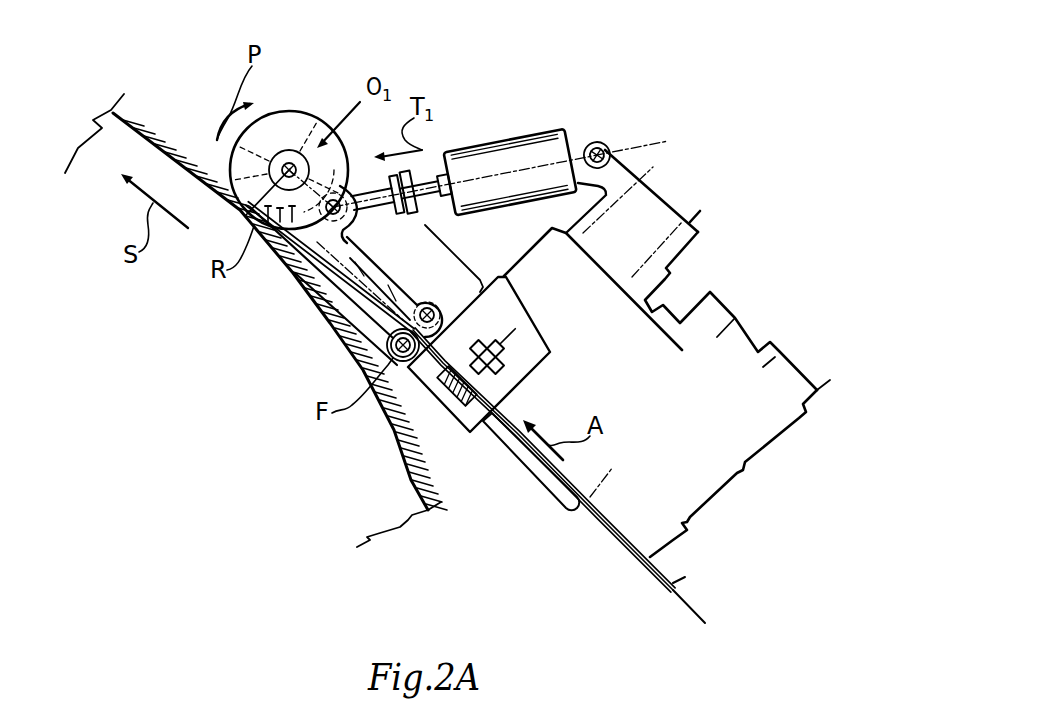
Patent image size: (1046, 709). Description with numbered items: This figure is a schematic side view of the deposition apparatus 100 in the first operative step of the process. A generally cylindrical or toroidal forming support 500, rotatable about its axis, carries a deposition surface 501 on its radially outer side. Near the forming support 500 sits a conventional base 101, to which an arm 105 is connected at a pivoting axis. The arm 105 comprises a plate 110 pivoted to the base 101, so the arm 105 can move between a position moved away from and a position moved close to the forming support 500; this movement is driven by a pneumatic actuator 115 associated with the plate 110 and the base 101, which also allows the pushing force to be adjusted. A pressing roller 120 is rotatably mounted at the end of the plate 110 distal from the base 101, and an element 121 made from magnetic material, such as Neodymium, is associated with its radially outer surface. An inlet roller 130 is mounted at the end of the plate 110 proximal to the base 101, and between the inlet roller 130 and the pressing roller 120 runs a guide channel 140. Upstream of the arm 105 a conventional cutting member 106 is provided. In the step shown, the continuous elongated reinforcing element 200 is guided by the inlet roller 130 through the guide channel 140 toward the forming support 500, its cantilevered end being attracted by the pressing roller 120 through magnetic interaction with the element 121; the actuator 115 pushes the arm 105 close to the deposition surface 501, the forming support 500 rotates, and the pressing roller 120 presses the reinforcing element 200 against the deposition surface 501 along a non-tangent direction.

The apparatus 100 is at (472, 90).
The base 101 is at (709, 216).
The arm 105 is at (345, 323).
The cutting member 106 is at (523, 348).
The plate 110 is at (328, 238).
The pneumatic actuator 115 is at (531, 130).
The pressing roller 120 is at (275, 117).
The element made from magnetic material 121 is at (305, 112).
The inlet roller 130 is at (403, 361).
The guide channel 140 is at (323, 279).
The continuous elongated reinforcing element 200 is at (623, 530).
The forming support 500 is at (136, 94).
The deposition surface 501 is at (157, 130).